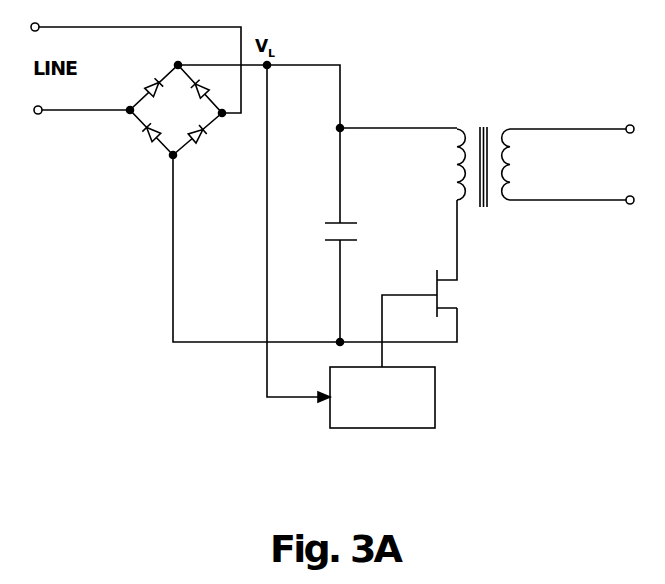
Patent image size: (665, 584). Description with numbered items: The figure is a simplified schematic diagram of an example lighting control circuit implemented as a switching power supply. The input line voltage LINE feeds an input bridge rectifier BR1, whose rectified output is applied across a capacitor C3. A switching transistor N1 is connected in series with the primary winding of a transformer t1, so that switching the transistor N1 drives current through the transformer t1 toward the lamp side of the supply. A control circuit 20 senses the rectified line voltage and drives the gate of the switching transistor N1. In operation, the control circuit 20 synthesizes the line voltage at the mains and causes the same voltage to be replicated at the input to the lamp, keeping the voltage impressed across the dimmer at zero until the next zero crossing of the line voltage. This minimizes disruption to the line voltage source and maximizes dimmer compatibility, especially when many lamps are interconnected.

The control circuit 20 is at (382, 397).
The input bridge rectifier BR1 is at (176, 110).
The capacitor C3 is at (356, 235).
The switching transistor N1 is at (433, 283).
The transformer t1 is at (545, 152).